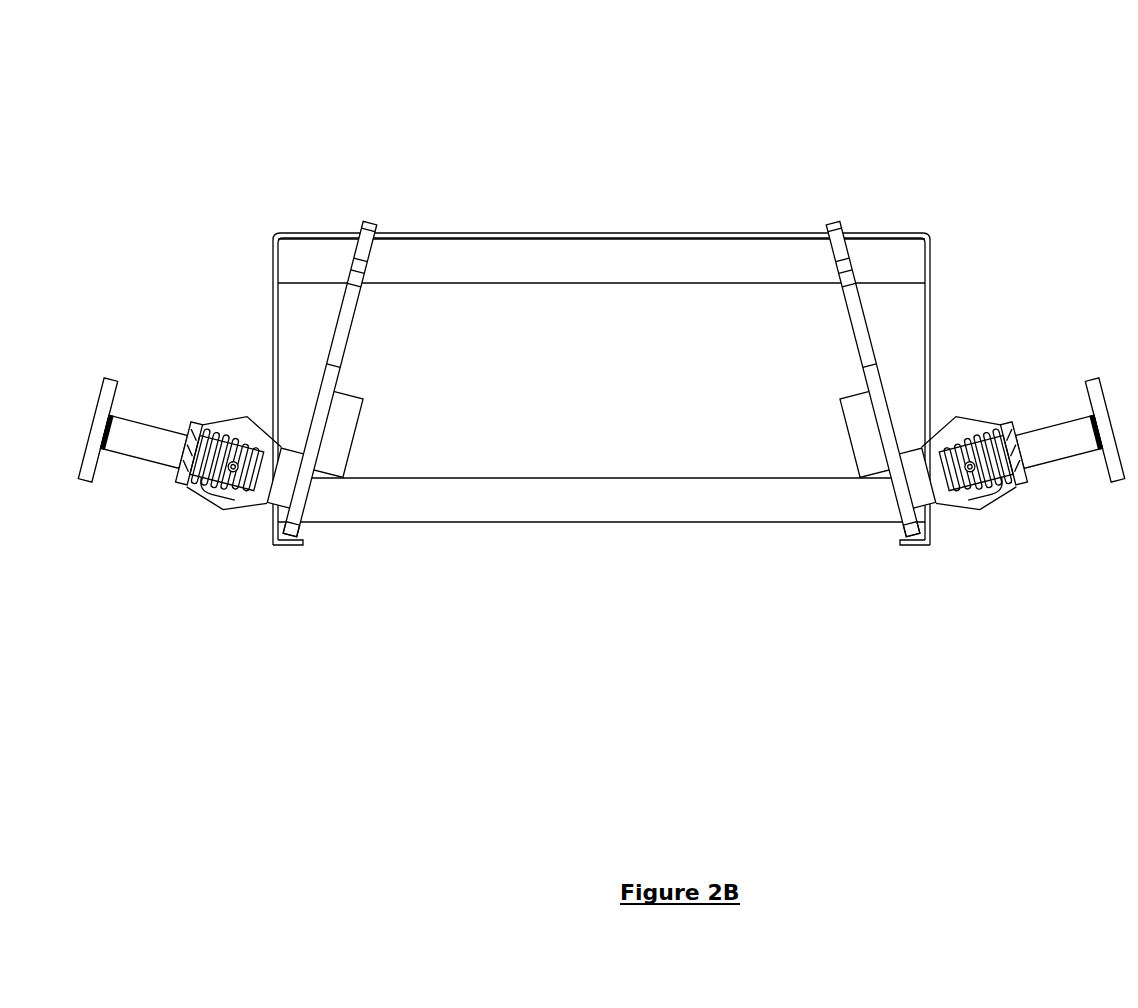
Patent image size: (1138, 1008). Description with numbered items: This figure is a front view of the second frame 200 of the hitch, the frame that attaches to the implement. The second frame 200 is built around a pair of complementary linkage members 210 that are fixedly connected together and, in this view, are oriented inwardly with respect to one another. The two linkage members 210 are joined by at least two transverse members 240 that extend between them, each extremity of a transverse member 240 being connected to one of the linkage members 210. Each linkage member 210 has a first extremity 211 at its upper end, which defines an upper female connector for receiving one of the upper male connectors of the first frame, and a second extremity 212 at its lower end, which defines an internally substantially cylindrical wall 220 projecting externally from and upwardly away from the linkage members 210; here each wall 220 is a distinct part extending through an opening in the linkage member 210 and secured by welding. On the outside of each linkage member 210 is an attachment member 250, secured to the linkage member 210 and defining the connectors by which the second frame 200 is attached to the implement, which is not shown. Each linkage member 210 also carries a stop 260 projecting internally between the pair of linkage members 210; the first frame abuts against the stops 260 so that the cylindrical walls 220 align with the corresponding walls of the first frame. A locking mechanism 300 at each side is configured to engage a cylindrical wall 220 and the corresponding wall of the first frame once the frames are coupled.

The second frame 200 is at (632, 33).
The linkage member 210 is at (348, 357).
The first extremity 211 is at (375, 255).
The second extremity 212 is at (307, 502).
The cylindrical wall 220 is at (257, 513).
The transverse member 240 is at (625, 271).
The attachment member 250 is at (275, 340).
The stop 260 is at (357, 437).
The locking mechanism 300 is at (153, 470).